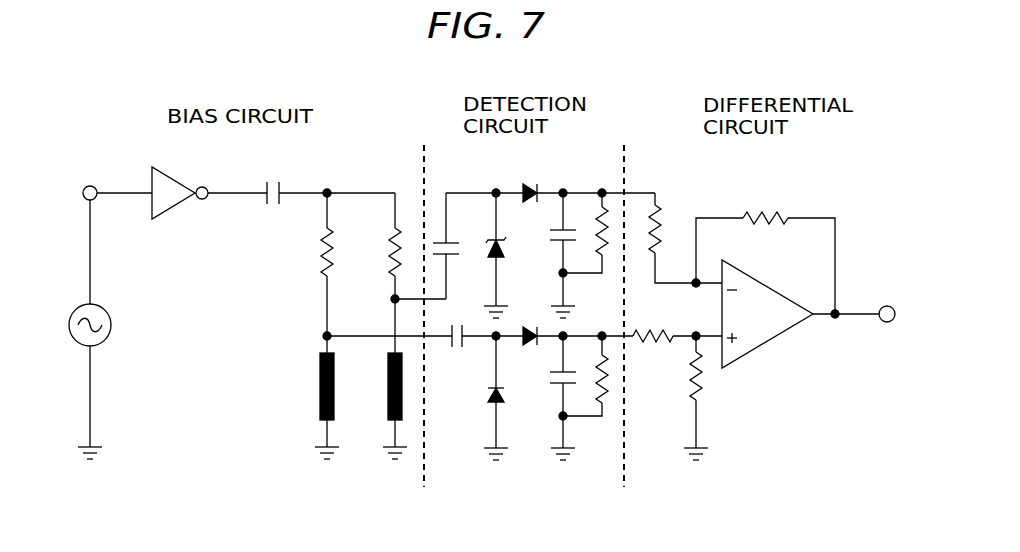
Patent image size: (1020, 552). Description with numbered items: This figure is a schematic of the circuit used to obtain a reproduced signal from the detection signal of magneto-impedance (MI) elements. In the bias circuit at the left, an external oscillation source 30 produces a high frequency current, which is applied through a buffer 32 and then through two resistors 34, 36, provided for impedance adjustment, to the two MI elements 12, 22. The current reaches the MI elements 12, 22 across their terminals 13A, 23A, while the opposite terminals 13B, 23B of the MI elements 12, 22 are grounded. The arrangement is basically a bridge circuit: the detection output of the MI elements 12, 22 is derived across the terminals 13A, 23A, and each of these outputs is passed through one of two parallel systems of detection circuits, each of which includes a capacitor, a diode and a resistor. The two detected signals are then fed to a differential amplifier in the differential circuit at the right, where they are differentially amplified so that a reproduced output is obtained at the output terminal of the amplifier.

The MI element 12 is at (330, 411).
The terminal 13A is at (367, 337).
The terminal 13B is at (313, 397).
The MI element 22 is at (415, 397).
The terminal 23A is at (397, 299).
The terminal 23B is at (380, 379).
The external oscillation source 30 is at (112, 322).
The buffer 32 is at (163, 215).
The resistor 34 is at (322, 272).
The resistor 36 is at (392, 250).